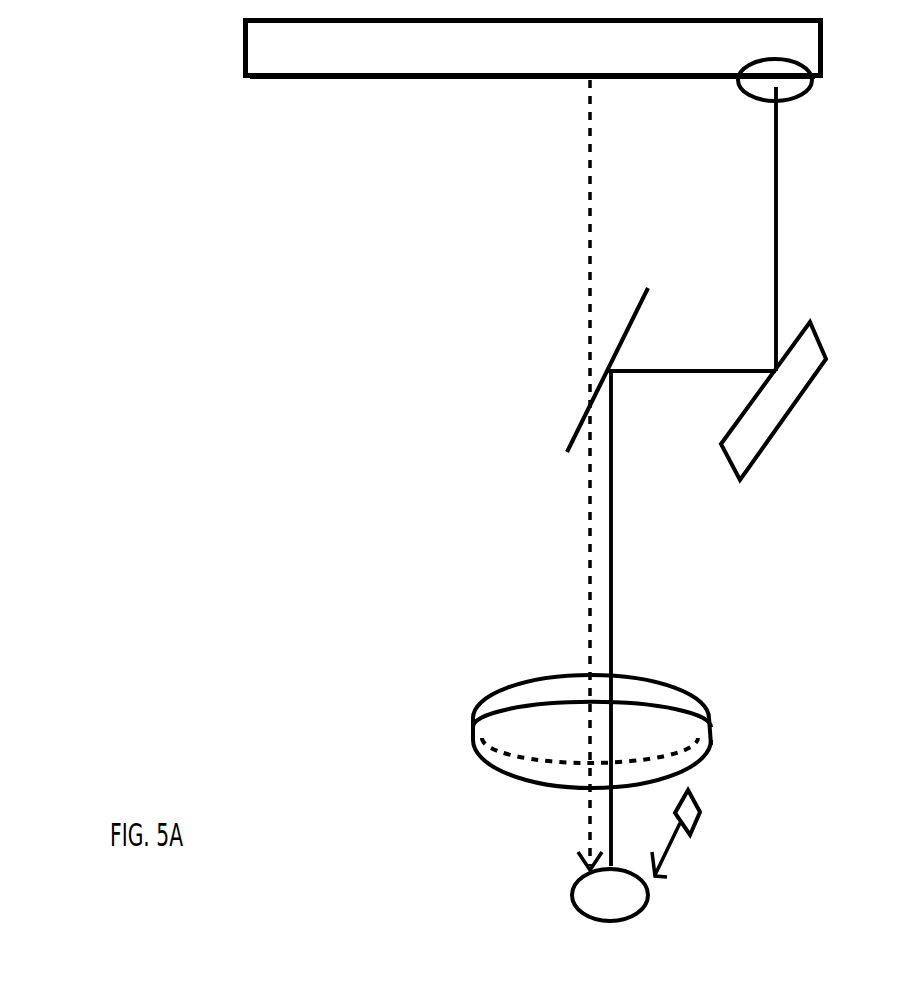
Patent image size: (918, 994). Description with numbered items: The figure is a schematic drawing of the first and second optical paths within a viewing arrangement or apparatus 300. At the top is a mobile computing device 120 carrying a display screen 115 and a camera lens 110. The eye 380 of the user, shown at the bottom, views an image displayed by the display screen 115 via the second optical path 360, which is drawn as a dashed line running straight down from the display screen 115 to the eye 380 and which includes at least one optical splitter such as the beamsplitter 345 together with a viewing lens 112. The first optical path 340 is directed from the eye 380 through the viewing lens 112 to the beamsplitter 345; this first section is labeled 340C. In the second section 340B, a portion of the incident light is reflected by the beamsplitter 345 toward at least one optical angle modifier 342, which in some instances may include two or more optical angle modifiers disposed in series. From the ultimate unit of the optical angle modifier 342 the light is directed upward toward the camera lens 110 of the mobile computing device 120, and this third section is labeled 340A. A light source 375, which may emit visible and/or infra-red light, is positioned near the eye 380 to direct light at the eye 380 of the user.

The viewing arrangement 300 is at (153, 665).
The mobile computing device 120 is at (223, 52).
The display screen 115 is at (338, 82).
The camera lens 110 is at (812, 90).
The first optical path 340 is at (795, 238).
The third section of first optical path 340A is at (776, 165).
The second section of first optical path 340B is at (652, 375).
The first section of first optical path 340C is at (611, 572).
The second optical path 360 is at (590, 213).
The beamsplitter 345 is at (575, 435).
The optical angle modifier 342 is at (793, 400).
The viewing lens 112 is at (712, 727).
The light source 375 is at (700, 812).
The eye 380 is at (642, 905).